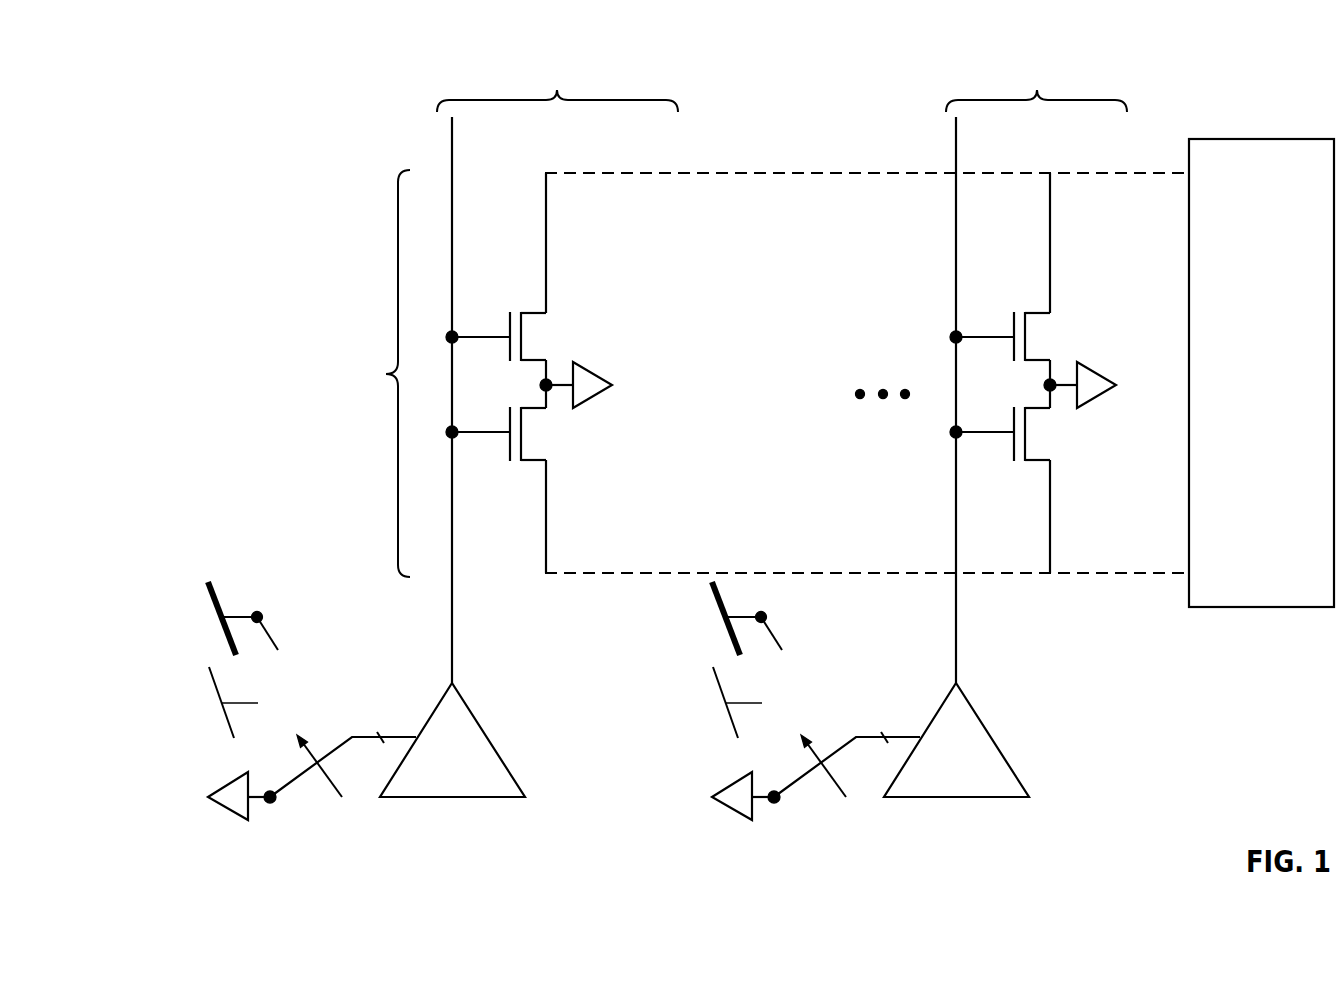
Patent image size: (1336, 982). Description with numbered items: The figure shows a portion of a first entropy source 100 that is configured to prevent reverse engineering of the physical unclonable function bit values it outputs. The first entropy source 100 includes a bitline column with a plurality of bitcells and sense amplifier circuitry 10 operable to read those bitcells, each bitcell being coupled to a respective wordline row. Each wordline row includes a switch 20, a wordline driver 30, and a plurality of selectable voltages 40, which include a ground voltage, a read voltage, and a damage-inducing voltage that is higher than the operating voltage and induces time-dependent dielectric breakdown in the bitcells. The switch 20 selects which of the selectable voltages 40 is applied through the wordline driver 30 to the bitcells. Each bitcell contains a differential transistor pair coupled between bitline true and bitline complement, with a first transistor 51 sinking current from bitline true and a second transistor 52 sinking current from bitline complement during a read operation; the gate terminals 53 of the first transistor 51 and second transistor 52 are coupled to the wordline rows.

The first entropy source 100 is at (214, 78).
The sense amplifier circuitry 10 is at (1263, 608).
The switch 20 is at (294, 787).
The wordline driver 30 is at (452, 799).
The selectable voltages 40 is at (130, 583).
The first transistor 51 is at (522, 337).
The second transistor 52 is at (522, 433).
The gate terminals 53 is at (483, 336).